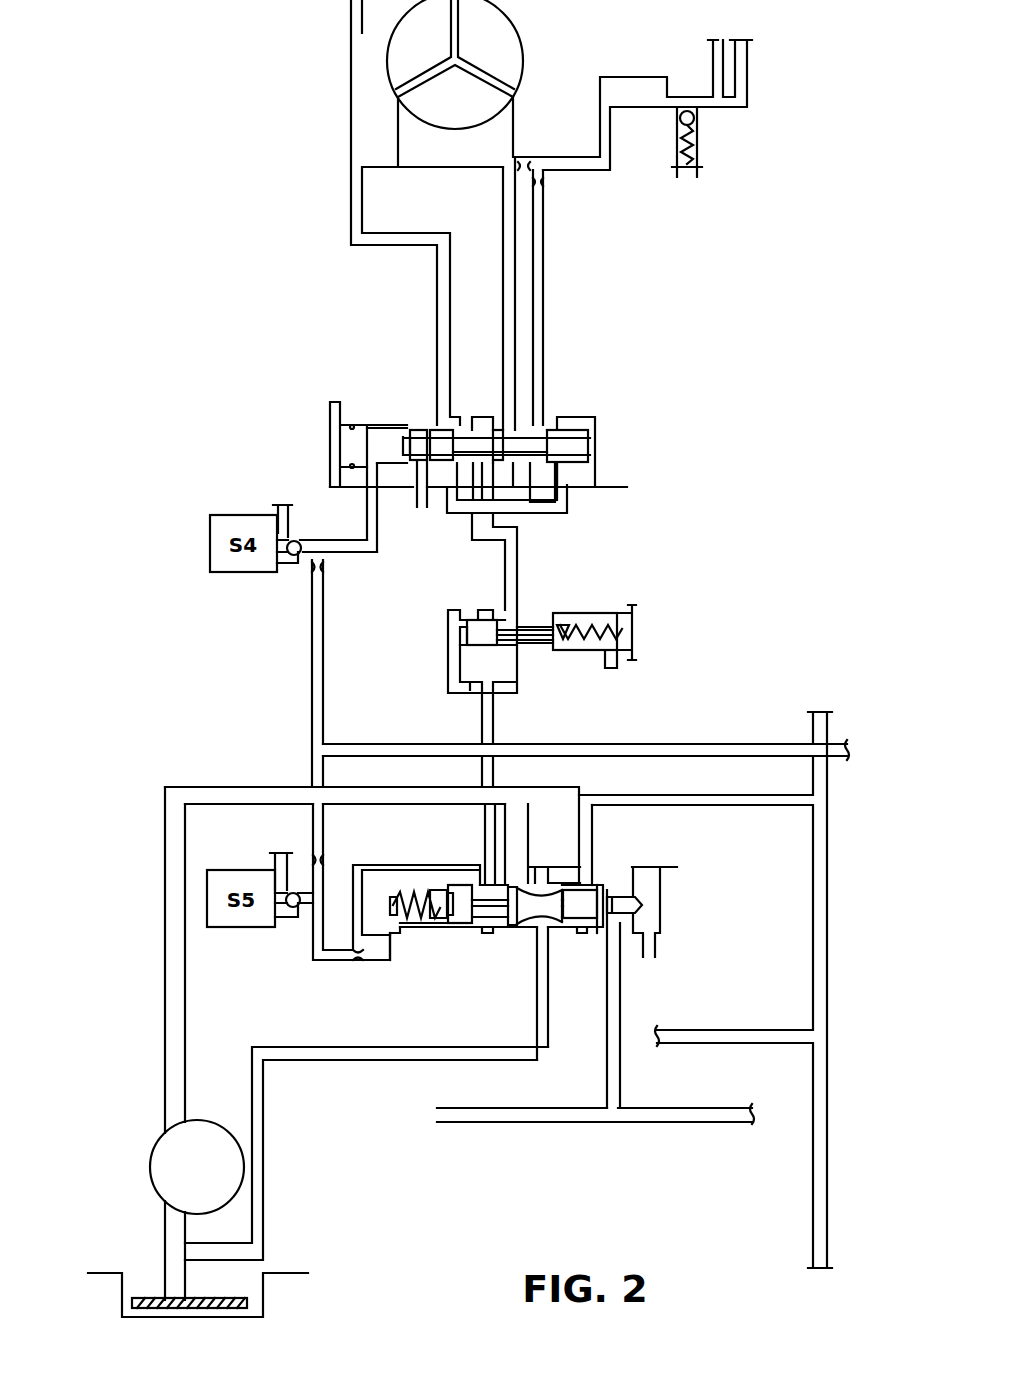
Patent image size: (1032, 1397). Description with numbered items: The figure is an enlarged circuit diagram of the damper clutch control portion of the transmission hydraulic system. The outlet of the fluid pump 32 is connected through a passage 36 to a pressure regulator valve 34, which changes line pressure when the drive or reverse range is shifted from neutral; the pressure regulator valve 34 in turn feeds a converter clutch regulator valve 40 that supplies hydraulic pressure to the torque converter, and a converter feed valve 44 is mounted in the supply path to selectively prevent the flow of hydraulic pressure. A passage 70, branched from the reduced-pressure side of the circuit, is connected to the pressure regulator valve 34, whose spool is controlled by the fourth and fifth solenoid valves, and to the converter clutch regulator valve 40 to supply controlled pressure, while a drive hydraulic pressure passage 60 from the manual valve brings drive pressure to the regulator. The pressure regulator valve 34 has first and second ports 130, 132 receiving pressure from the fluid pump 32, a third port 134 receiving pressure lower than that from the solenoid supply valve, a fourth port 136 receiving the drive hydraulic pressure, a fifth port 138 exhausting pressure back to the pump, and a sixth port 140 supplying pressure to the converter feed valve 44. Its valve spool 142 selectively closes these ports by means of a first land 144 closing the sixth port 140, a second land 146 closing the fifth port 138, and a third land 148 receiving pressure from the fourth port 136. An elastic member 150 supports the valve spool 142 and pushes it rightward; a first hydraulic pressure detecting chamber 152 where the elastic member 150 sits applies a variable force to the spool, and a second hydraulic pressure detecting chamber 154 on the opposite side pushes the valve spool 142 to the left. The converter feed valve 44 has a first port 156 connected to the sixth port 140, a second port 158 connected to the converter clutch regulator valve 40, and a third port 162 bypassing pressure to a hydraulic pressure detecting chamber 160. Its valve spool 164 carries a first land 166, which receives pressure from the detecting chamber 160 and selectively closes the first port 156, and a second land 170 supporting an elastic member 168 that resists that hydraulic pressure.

The fluid pump 32 is at (150, 1163).
The pressure regulator valve 34 is at (678, 933).
The passage 36 is at (780, 800).
The converter clutch regulator valve 40 is at (617, 428).
The converter feed valve 44 is at (667, 601).
The drive hydraulic pressure passage 60 is at (705, 1122).
The passage 70 is at (753, 745).
The first port 130 is at (514, 852).
The second port 132 is at (593, 868).
The third port 134 is at (393, 943).
The fourth port 136 is at (613, 933).
The fifth port 138 is at (535, 930).
The sixth port 140 is at (487, 873).
The valve spool 142 is at (646, 908).
The first land 144 is at (457, 907).
The second land 146 is at (503, 890).
The third land 148 is at (586, 897).
The elastic member 150 is at (402, 900).
The first hydraulic pressure detecting chamber 152 is at (407, 923).
The second hydraulic pressure detecting chamber 154 is at (613, 890).
The first port 156 is at (485, 657).
The spool 158 is at (510, 613).
The hydraulic pressure detecting chamber 160 is at (448, 622).
The third port 162 is at (510, 647).
The valve spool 164 is at (633, 637).
The first land 166 is at (472, 618).
The elastic member 168 is at (587, 615).
The second land 170 is at (532, 623).